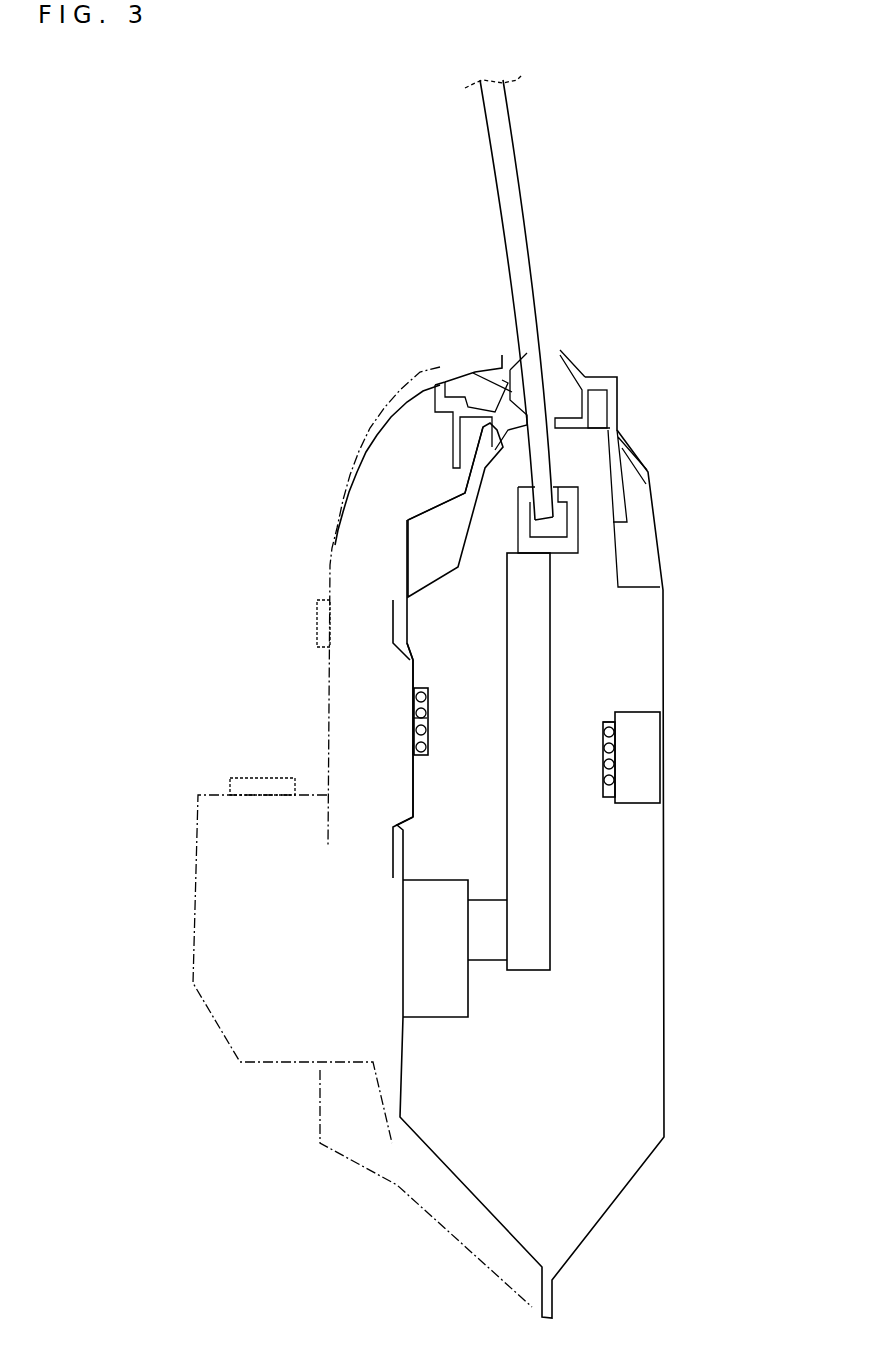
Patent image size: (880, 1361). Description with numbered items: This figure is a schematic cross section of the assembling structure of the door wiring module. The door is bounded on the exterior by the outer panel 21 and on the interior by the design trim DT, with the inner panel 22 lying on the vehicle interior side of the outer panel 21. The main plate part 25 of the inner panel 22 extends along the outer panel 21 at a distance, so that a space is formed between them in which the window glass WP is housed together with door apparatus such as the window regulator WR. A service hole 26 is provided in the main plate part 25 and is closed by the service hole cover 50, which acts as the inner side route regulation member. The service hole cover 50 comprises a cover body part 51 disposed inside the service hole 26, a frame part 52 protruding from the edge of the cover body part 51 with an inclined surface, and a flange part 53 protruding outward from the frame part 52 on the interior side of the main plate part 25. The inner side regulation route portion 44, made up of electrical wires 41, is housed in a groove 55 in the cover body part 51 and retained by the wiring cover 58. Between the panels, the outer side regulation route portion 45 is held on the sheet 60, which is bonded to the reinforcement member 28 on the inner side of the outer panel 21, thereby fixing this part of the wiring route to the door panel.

The outer panel 21 is at (665, 653).
The window glass WP is at (530, 220).
The window regulator WR is at (527, 972).
The design trim DT is at (335, 545).
The main plate part 25 is at (407, 623).
The inner panel 22 is at (454, 528).
The flange part 53 is at (392, 623).
The frame part 52 is at (407, 650).
The cover body part 51 is at (410, 668).
The groove 55 is at (430, 713).
The electrical wire 41 is at (430, 690).
The wiring cover 58 is at (413, 717).
The inner side regulation route portion 44 is at (402, 757).
The service hole cover 50 is at (430, 803).
The service hole 26 is at (422, 827).
The outer side regulation route portion 45 is at (592, 710).
The sheet 60 is at (603, 783).
The reinforcement member 28 is at (640, 803).